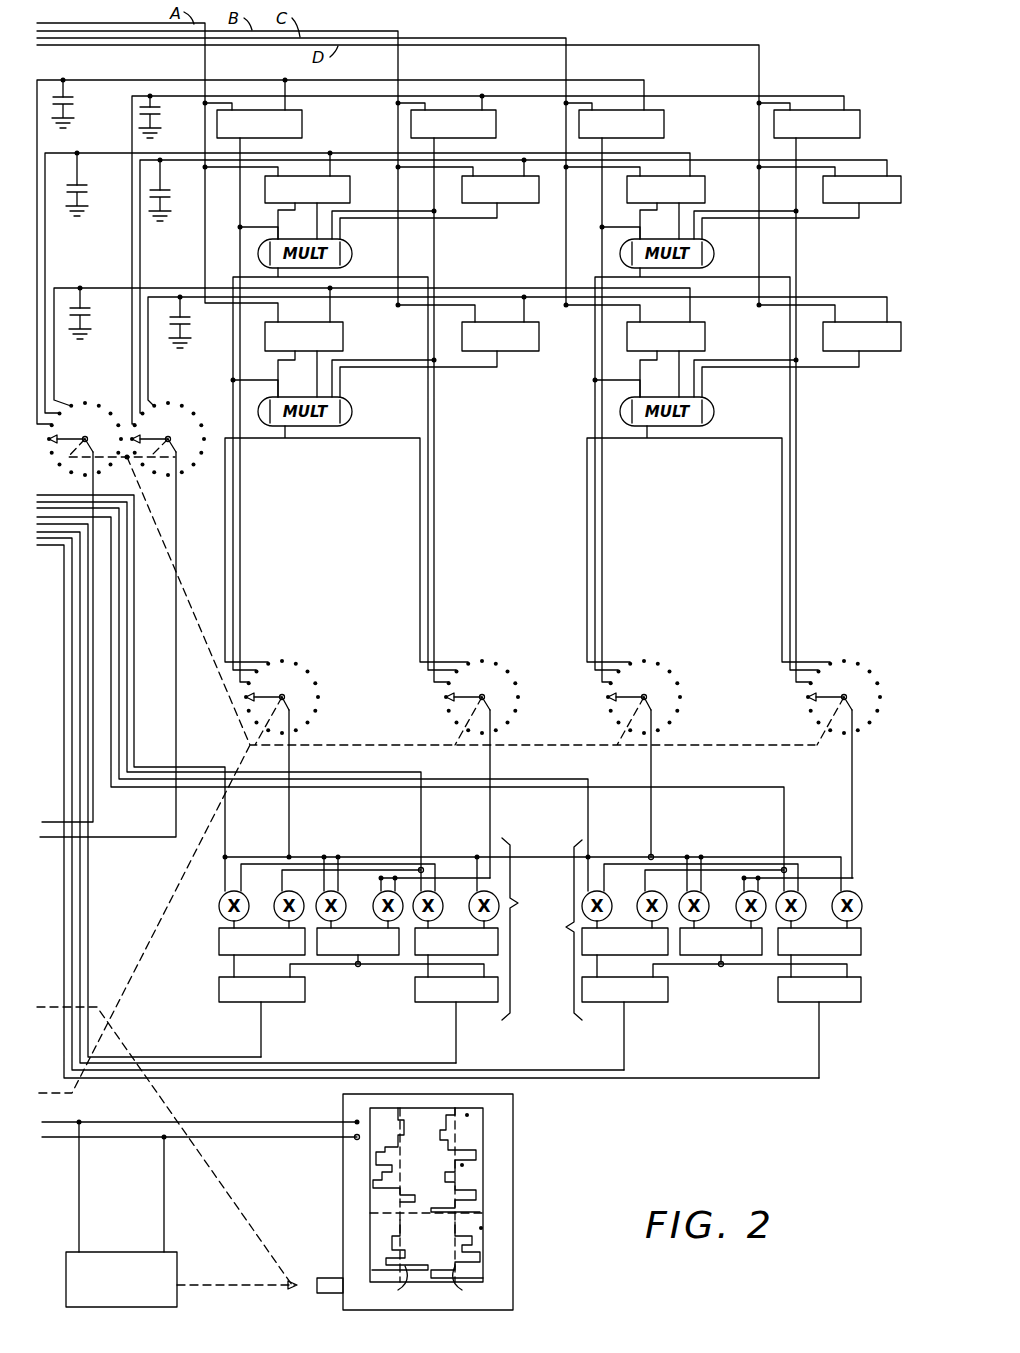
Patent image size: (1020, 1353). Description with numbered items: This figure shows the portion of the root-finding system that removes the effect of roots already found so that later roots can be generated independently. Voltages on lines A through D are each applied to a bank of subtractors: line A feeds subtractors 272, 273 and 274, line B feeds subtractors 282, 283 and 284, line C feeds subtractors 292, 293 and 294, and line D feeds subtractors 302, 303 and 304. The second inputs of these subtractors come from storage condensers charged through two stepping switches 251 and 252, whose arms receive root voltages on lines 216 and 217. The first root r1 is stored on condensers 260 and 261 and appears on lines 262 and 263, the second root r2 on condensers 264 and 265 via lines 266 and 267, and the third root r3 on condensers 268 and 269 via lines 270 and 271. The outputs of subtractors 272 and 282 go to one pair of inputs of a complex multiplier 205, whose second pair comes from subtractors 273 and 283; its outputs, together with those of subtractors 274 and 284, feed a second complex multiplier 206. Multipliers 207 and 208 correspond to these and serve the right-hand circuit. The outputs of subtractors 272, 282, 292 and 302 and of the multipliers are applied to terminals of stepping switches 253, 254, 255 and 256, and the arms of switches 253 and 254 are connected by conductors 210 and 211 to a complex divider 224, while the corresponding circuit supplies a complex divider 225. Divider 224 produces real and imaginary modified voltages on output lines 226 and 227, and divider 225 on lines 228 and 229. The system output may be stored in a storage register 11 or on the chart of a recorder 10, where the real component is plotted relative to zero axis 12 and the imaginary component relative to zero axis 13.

The recorder 10 is at (506, 1223).
The storage register 11 is at (138, 1251).
The zero axis 12 is at (391, 1285).
The zero axis 13 is at (470, 1285).
The first root r1 is at (481, 1228).
The second root r2 is at (462, 1165).
The third root r3 is at (467, 1115).
The complex multiplier 205 is at (338, 242).
The complex multiplier 206 is at (338, 397).
The complex multiplier 207 is at (706, 446).
The complex multiplier 208 is at (708, 520).
The conductor 210 is at (289, 844).
The conductor 211 is at (490, 814).
The line 216 is at (94, 486).
The line 217 is at (177, 514).
The complex divider 224 is at (388, 929).
The complex divider 225 is at (691, 930).
The output line 226 is at (263, 1052).
The output line 227 is at (466, 1041).
The output line 228 is at (624, 1053).
The output line 229 is at (829, 1041).
The stepping switch 251 is at (85, 439).
The stepping switch 252 is at (168, 439).
The stepping switch 253 is at (282, 697).
The stepping switch 254 is at (482, 697).
The stepping switch 255 is at (644, 697).
The stepping switch 256 is at (844, 697).
The storage condenser 260 is at (76, 102).
The storage condenser 261 is at (157, 113).
The line 262 is at (522, 80).
The line 263 is at (553, 93).
The storage condenser 264 is at (83, 190).
The storage condenser 265 is at (168, 195).
The line 266 is at (390, 152).
The line 267 is at (351, 161).
The storage condenser 268 is at (92, 314).
The storage condenser 269 is at (192, 323).
The line 270 is at (392, 284).
The line 271 is at (396, 299).
The subtractor 272 is at (259, 396).
The subtractor 273 is at (307, 207).
The subtractor 274 is at (304, 359).
The subtractor 282 is at (414, 396).
The subtractor 283 is at (439, 207).
The subtractor 284 is at (439, 359).
The subtractor 292 is at (621, 396).
The subtractor 293 is at (666, 207).
The subtractor 294 is at (666, 359).
The subtractor 302 is at (777, 396).
The subtractor 303 is at (801, 207).
The subtractor 304 is at (801, 359).